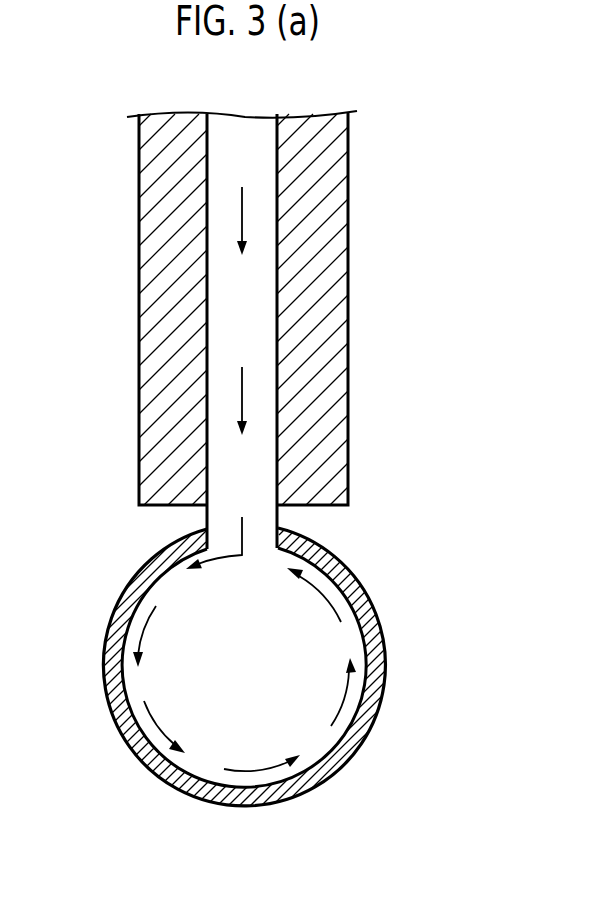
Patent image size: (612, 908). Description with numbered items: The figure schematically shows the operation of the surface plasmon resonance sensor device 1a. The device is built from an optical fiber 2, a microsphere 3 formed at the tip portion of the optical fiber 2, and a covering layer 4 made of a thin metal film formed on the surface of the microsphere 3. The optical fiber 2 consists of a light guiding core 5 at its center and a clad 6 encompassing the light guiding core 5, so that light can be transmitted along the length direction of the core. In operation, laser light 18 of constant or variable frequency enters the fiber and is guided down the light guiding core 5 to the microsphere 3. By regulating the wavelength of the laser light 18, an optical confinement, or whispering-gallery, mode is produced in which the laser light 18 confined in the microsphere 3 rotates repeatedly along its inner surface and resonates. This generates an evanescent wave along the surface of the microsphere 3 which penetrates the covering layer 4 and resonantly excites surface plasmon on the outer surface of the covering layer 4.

The surface plasmon resonance sensor device 1a is at (436, 122).
The optical fiber 2 is at (386, 311).
The clad 6 is at (348, 205).
The light guiding core 5 is at (244, 143).
The covering layer 4 is at (360, 582).
The microsphere 3 is at (342, 647).
The laser light 18 is at (243, 393).